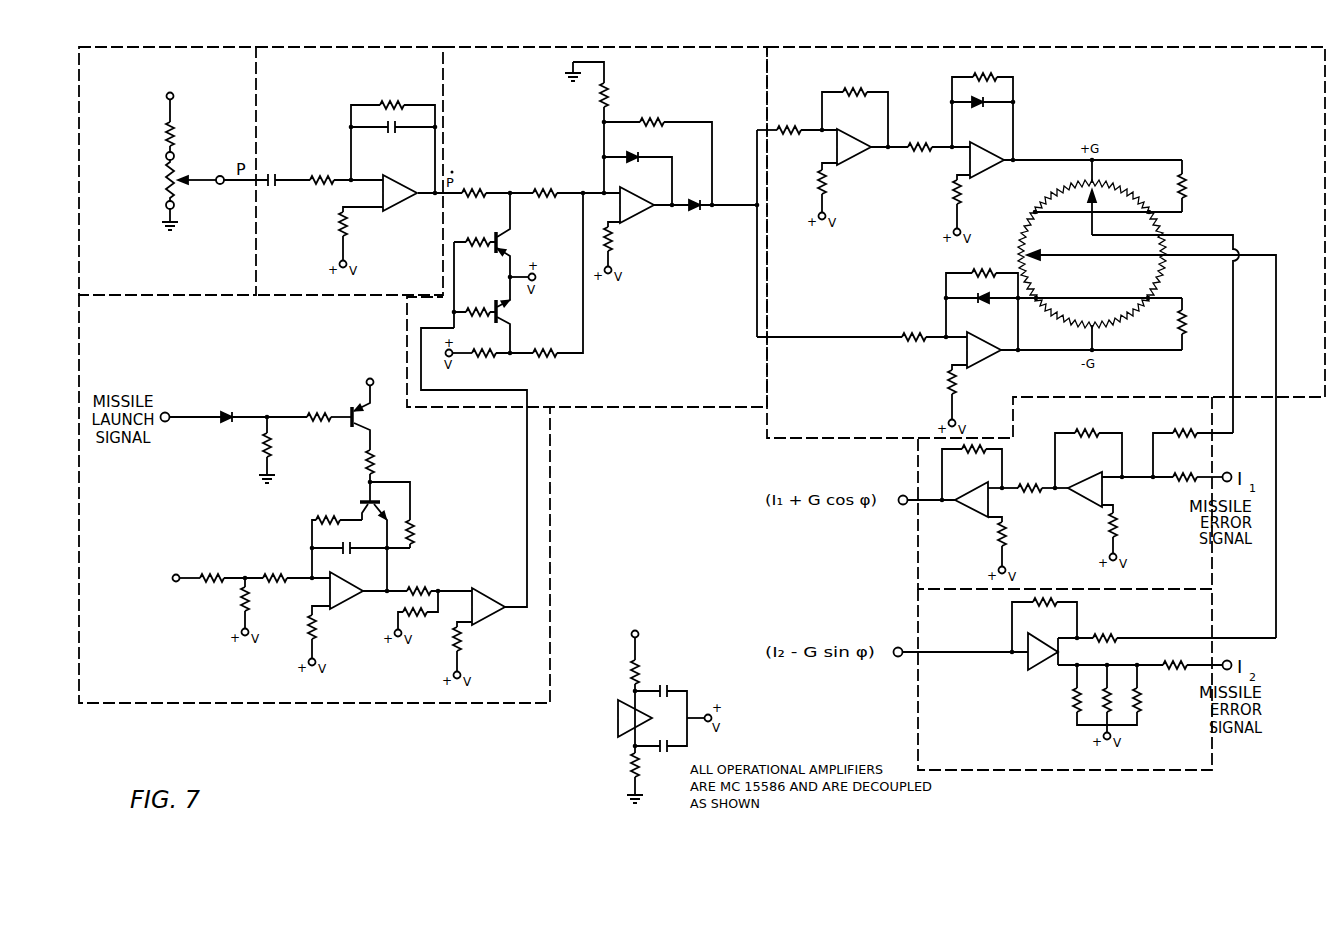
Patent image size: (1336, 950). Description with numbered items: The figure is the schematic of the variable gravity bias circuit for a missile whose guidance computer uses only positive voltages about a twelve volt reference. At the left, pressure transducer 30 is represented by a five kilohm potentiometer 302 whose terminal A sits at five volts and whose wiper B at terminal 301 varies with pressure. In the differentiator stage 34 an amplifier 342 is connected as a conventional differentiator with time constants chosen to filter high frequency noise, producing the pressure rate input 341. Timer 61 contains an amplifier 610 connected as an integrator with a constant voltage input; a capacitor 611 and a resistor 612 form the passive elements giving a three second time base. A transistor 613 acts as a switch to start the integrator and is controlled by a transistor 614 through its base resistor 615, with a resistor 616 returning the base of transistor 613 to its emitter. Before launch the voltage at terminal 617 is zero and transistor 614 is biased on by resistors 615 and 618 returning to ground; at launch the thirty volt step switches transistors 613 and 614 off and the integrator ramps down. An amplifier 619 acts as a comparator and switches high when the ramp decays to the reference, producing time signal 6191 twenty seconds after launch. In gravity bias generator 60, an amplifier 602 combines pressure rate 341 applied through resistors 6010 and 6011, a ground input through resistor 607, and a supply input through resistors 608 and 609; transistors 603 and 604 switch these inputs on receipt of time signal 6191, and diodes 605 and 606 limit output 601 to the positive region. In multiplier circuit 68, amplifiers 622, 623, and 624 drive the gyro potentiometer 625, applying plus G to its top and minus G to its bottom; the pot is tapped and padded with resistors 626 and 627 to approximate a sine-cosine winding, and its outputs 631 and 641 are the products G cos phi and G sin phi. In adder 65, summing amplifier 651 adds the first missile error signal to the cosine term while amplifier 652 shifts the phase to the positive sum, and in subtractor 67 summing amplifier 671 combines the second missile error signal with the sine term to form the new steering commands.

The pressure transducer 30 is at (147, 47).
The differentiator circuit 34 is at (324, 47).
The gravity bias generator 60 is at (568, 47).
The timer 61 is at (550, 548).
The adder 65 is at (918, 562).
The subtractor 67 is at (918, 602).
The multiplier circuit 68 is at (1007, 47).
The wiper terminal 301 is at (220, 184).
The potentiometer 302 is at (167, 175).
The pressure rate input 341 is at (451, 199).
The amplifier 342 is at (397, 160).
The output 601 is at (748, 195).
The amplifier 602 is at (634, 218).
The transistor 603 is at (512, 244).
The transistor 604 is at (512, 314).
The diode 605 is at (639, 155).
The diode 606 is at (698, 213).
The resistor 607 is at (609, 96).
The resistor 608 is at (567, 358).
The resistor 609 is at (503, 358).
The amplifier 610 is at (342, 607).
The capacitor 611 is at (349, 544).
The resistor 612 is at (290, 560).
The transistor 613 is at (363, 500).
The transistor 614 is at (365, 417).
The base resistor 615 is at (332, 395).
The resistor 616 is at (414, 530).
The terminal 617 is at (170, 412).
The resistor 618 is at (262, 450).
The amplifier 619 is at (487, 622).
The amplifier 622 is at (856, 157).
The amplifier 623 is at (989, 173).
The amplifier 624 is at (983, 363).
The gyro potentiometer 625 is at (1162, 274).
The resistor 626 is at (1186, 186).
The resistor 627 is at (1186, 323).
The output 631 is at (1180, 235).
The output 641 is at (1277, 294).
The summing amplifier 651 is at (1090, 500).
The amplifier 652 is at (985, 517).
The summing amplifier 671 is at (1046, 667).
The resistor 6010 is at (497, 172).
The resistor 6011 is at (564, 172).
The time signal 6191 is at (526, 435).